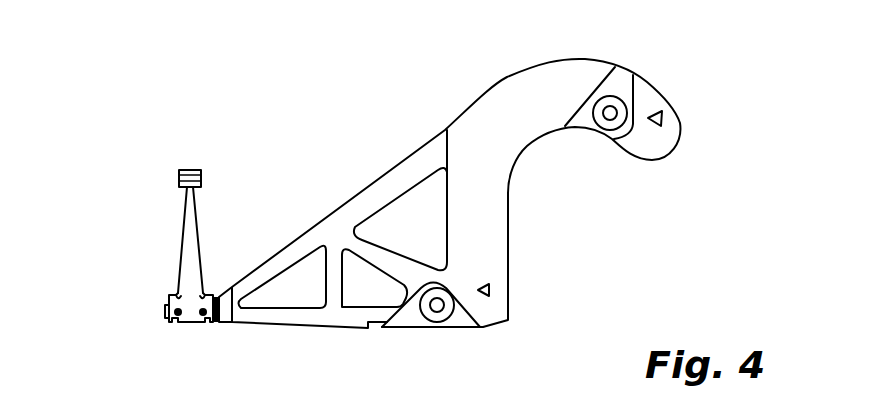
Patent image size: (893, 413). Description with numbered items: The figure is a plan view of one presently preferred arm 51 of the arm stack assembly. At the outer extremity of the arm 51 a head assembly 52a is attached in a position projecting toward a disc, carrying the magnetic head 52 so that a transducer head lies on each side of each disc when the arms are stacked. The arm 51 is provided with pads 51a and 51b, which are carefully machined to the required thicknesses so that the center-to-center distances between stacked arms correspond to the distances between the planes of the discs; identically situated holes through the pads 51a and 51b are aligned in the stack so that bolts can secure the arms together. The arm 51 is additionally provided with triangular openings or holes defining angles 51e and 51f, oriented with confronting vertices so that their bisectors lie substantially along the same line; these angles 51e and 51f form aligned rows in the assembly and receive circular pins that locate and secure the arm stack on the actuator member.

The arm 51 is at (372, 180).
The pad 51a is at (596, 84).
The pad 51b is at (453, 330).
The angle 51e is at (661, 109).
The angle 51f is at (491, 289).
The magnetic head 52 is at (176, 173).
The head assembly 52a is at (181, 248).